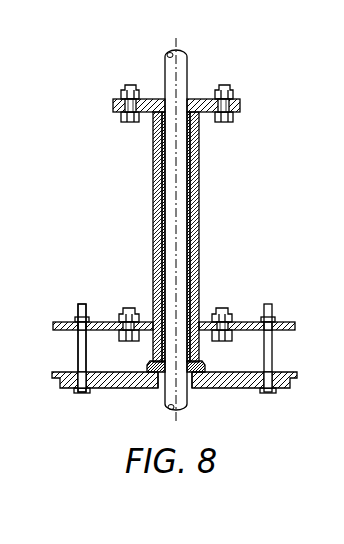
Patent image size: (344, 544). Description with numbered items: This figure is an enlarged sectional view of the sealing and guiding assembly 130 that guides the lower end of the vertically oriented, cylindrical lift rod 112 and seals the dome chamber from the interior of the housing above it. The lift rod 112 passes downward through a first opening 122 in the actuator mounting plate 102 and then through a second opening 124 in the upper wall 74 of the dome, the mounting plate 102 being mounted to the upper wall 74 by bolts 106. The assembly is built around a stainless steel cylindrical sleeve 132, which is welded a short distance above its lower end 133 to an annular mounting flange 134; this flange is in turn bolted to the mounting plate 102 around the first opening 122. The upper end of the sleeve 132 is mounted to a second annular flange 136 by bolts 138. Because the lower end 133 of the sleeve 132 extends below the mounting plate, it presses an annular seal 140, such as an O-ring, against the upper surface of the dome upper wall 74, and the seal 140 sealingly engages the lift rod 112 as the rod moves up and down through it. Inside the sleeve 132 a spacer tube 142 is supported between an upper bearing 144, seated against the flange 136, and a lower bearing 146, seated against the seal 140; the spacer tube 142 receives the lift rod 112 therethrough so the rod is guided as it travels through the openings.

The upper wall of the dome 74 is at (101, 387).
The mounting plate 102 is at (105, 321).
The bolts 106 is at (78, 345).
The lift rod 112 is at (166, 68).
The first opening 122 is at (145, 321).
The second opening 124 is at (196, 382).
The sealing and guiding assembly 130 is at (172, 237).
The cylindrical sleeve 132 is at (153, 238).
The lower end of the sleeve 133 is at (147, 355).
The annular mounting flange 134 is at (137, 308).
The second annular flange 136 is at (150, 98).
The bolts 138 is at (122, 90).
The annular seal 140 is at (204, 364).
The spacer tube 142 is at (155, 172).
The upper bearing 144 is at (198, 138).
The lower bearing 146 is at (199, 318).